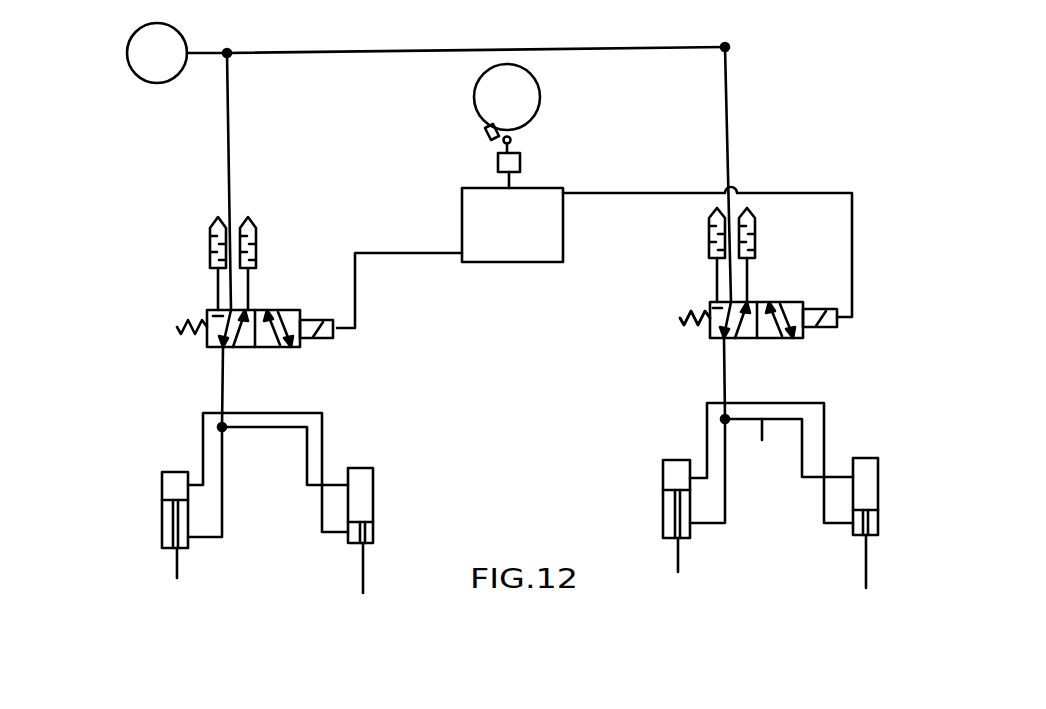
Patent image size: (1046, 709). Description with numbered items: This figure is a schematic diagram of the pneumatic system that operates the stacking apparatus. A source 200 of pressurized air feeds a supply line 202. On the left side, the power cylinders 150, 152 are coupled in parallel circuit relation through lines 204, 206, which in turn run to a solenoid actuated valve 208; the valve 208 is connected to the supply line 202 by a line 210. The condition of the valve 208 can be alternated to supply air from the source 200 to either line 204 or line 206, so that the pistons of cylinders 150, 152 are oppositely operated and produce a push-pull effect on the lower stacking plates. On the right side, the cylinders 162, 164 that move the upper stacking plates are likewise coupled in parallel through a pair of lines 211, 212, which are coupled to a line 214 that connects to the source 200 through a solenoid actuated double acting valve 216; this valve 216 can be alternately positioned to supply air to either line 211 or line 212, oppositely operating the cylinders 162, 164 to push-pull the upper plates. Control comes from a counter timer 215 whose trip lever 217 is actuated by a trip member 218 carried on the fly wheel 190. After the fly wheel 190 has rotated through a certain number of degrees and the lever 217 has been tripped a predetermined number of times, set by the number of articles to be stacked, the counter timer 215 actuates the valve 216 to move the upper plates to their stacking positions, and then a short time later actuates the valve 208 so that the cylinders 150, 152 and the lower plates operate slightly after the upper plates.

The power cylinder 150 is at (162, 521).
The power cylinder 152 is at (368, 500).
The cylinder 162 is at (663, 474).
The cylinder 164 is at (866, 468).
The fly wheel 190 is at (538, 87).
The source of pressurized air 200 is at (135, 60).
The supply line 202 is at (205, 53).
The line 204 is at (203, 438).
The line 206 is at (227, 480).
The solenoid actuated valve 208 is at (170, 343).
The line 210 is at (227, 172).
The line 211 is at (707, 423).
The line 212 is at (732, 495).
The line 214 is at (723, 362).
The counter timer 215 is at (555, 230).
The solenoid actuated double acting valve 216 is at (673, 305).
The trip lever 217 is at (513, 139).
The trip member 218 is at (482, 130).